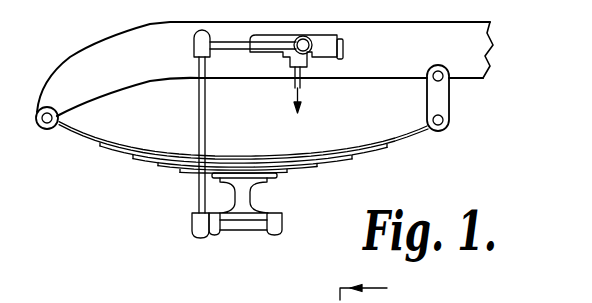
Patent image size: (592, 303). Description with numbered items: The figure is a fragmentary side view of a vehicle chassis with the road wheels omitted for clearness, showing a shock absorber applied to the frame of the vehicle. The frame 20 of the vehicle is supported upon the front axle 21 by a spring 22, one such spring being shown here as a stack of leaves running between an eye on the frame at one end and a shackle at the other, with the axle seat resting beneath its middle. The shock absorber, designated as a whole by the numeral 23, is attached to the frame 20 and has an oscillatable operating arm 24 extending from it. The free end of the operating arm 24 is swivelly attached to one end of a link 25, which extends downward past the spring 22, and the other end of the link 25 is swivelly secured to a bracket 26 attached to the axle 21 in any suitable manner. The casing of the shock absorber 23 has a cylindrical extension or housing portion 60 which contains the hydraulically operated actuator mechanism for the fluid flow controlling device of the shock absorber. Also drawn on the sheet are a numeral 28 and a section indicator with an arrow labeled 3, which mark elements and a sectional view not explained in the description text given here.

The frame 20 is at (463, 47).
The front axle 21 is at (243, 200).
The spring 22 is at (235, 167).
The shock absorber 23 is at (343, 36).
The operating arm 24 is at (237, 49).
The link 25 is at (199, 110).
The bracket 26 is at (213, 226).
The element 28 is at (273, 295).
The housing portion 60 is at (307, 64).
The section line 3 is at (371, 293).